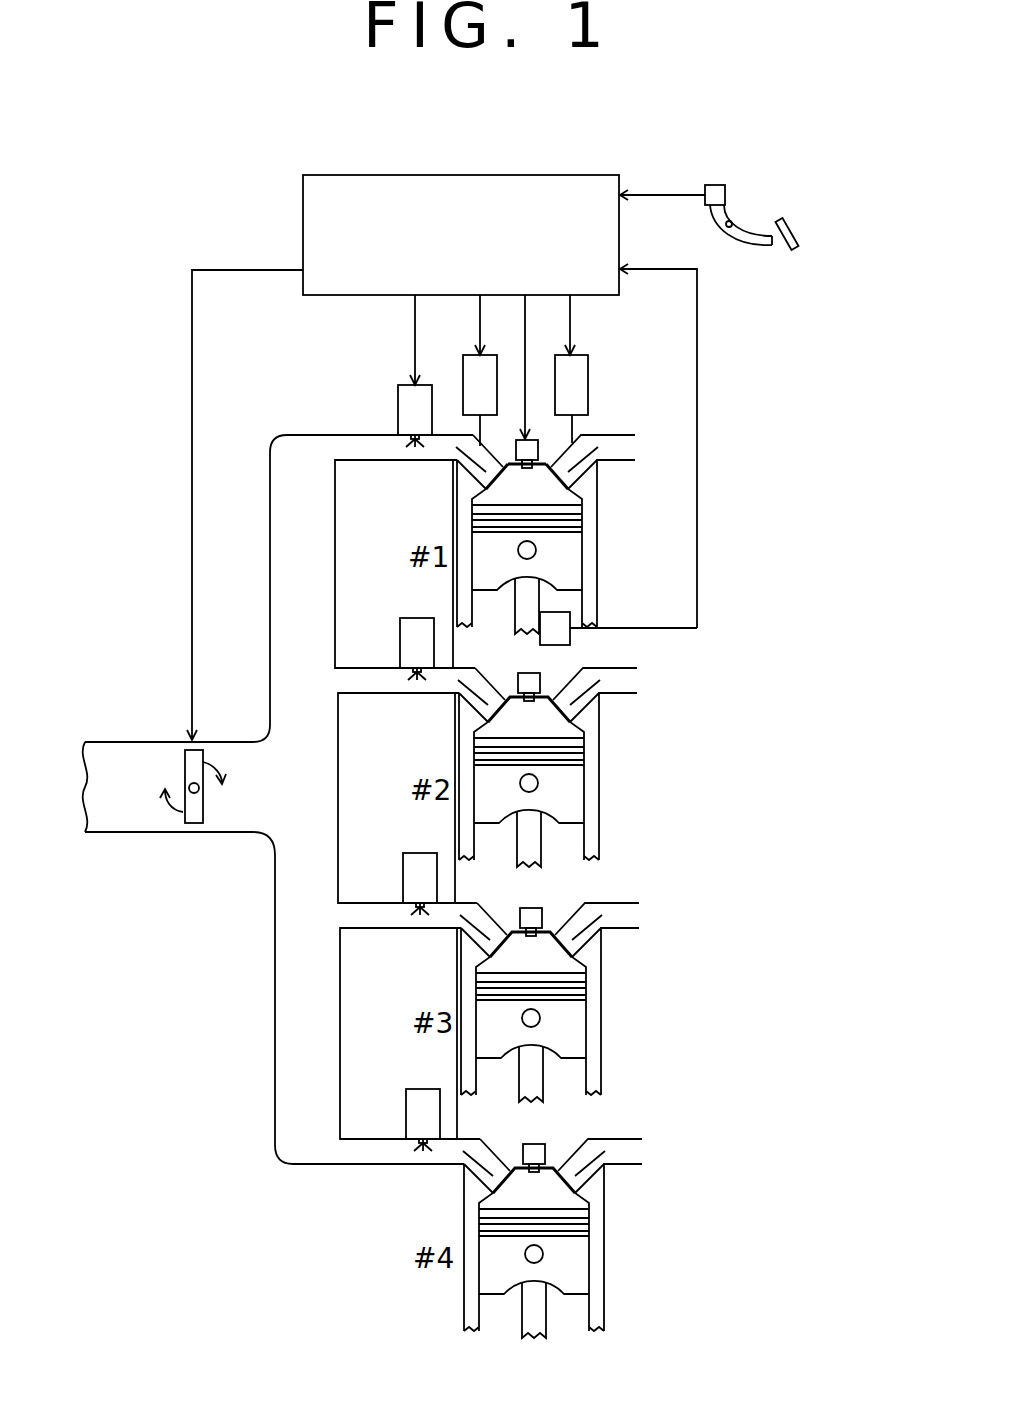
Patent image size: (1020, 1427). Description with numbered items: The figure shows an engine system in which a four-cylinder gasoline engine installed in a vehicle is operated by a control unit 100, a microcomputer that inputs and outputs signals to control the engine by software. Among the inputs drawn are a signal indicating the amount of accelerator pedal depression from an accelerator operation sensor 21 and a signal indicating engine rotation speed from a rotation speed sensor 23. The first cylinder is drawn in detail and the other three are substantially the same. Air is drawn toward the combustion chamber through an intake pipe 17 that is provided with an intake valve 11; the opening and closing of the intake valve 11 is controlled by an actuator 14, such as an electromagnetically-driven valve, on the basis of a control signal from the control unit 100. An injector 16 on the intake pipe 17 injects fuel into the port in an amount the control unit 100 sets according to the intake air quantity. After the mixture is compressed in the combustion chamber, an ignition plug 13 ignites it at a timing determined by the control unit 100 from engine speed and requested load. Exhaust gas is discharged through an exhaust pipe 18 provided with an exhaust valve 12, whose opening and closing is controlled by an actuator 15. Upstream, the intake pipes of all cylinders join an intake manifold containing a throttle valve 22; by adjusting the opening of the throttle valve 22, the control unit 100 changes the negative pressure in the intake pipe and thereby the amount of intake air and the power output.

The control unit 100 is at (565, 217).
The intake valve 11 is at (468, 475).
The exhaust valve 12 is at (582, 476).
The ignition plug 13 is at (528, 468).
The actuator 14 is at (466, 353).
The actuator 15 is at (584, 355).
The injector 16 is at (398, 382).
The intake pipe 17 is at (332, 445).
The exhaust pipe 18 is at (610, 442).
The accelerator operation sensor 21 is at (730, 197).
The throttle valve 22 is at (183, 763).
The rotation speed sensor 23 is at (570, 637).